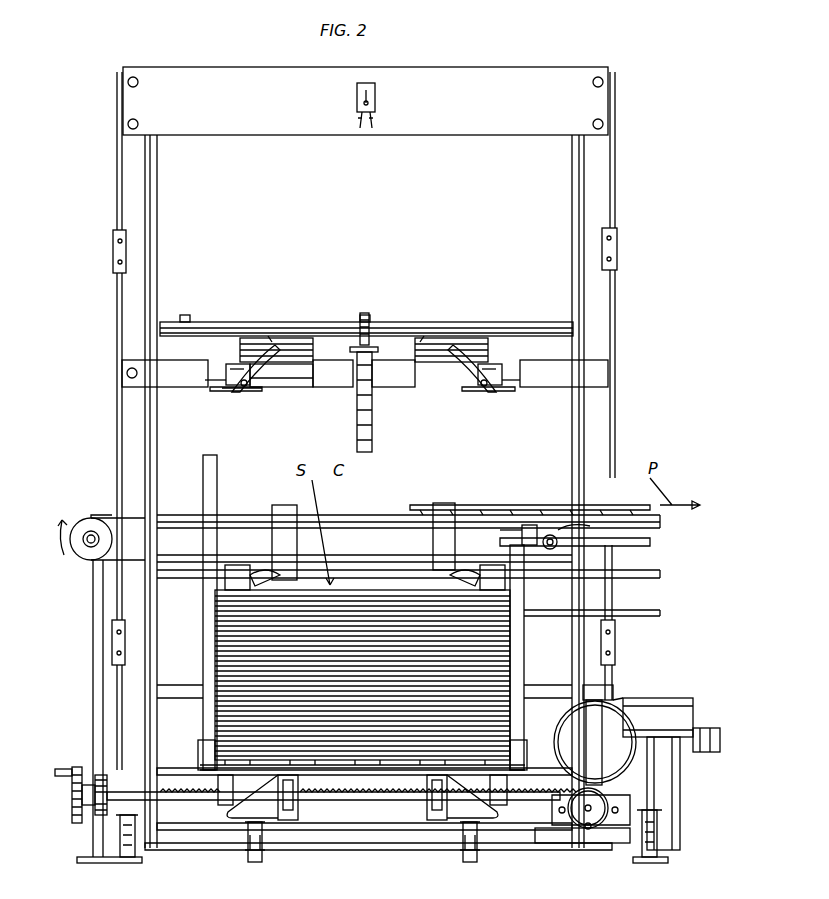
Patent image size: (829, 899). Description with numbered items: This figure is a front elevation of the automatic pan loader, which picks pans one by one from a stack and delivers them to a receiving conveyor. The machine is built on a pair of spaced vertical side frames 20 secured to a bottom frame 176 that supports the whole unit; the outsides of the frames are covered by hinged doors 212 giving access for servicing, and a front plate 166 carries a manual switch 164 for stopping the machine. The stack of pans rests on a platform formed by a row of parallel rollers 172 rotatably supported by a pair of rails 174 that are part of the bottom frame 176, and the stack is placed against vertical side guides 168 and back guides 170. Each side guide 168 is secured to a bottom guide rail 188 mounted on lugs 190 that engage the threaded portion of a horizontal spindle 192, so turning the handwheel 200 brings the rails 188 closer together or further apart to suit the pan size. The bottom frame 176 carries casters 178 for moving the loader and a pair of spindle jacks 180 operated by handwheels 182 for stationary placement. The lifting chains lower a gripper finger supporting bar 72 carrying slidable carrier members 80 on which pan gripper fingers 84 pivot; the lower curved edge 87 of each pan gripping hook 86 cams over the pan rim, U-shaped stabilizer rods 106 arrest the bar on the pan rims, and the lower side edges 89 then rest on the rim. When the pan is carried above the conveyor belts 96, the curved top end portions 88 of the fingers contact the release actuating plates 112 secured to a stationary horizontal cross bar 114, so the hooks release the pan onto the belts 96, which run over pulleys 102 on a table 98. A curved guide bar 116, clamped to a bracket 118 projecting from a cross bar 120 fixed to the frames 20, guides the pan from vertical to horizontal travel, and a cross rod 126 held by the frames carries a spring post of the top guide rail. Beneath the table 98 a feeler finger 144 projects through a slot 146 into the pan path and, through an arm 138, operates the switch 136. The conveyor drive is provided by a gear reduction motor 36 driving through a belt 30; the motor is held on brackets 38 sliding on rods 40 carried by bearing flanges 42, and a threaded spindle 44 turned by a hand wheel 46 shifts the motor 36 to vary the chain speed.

The spaced frames 20 is at (117, 180).
The belt 30 is at (678, 810).
The gear reduction motor 36 is at (562, 712).
The brackets 38 is at (556, 735).
The rods 40 is at (558, 812).
The bearing flanges 42 is at (560, 826).
The threaded spindle 44 is at (585, 814).
The hand wheel 46 is at (588, 832).
The gripper finger supporting bar 72 is at (287, 388).
The gripper finger carrier member 80 is at (226, 374).
The pan gripper finger 84 is at (262, 392).
The pan gripping hook 86 is at (240, 392).
The lower curved edge 87 is at (246, 392).
The curved top end portion 88 is at (268, 336).
The lower side edge 89 is at (243, 388).
The conveyor belts 96 is at (192, 515).
The table 98 is at (615, 546).
The pulleys 102 is at (74, 560).
The U-shaped stabilizer rod 106 is at (215, 388).
The release actuating plates 112 is at (240, 352).
The horizontal cross bar 114 is at (462, 323).
The curved guide bar 116 is at (370, 412).
The bracket 118 is at (372, 352).
The cross bar 120 is at (178, 387).
The cross rod 126 is at (330, 324).
The switch 136 is at (530, 525).
The arm 138 is at (552, 535).
The feeler finger 144 is at (582, 506).
The slot 146 is at (582, 532).
The manual switch 164 is at (375, 98).
The front plate 166 is at (466, 136).
The vertical side guides 168 is at (203, 470).
The vertical back guides 170 is at (272, 508).
The rollers 172 is at (372, 772).
The rails 174 is at (298, 822).
The bottom frame 176 is at (354, 848).
The casters 178 is at (248, 850).
The spindle jacks 180 is at (110, 863).
The handwheels 182 is at (118, 818).
The bottom guide rail 188 is at (198, 750).
The lugs 190 is at (218, 785).
The horizontal spindle 192 is at (180, 800).
The handwheel 200 is at (76, 768).
The hinged doors 212 is at (117, 207).